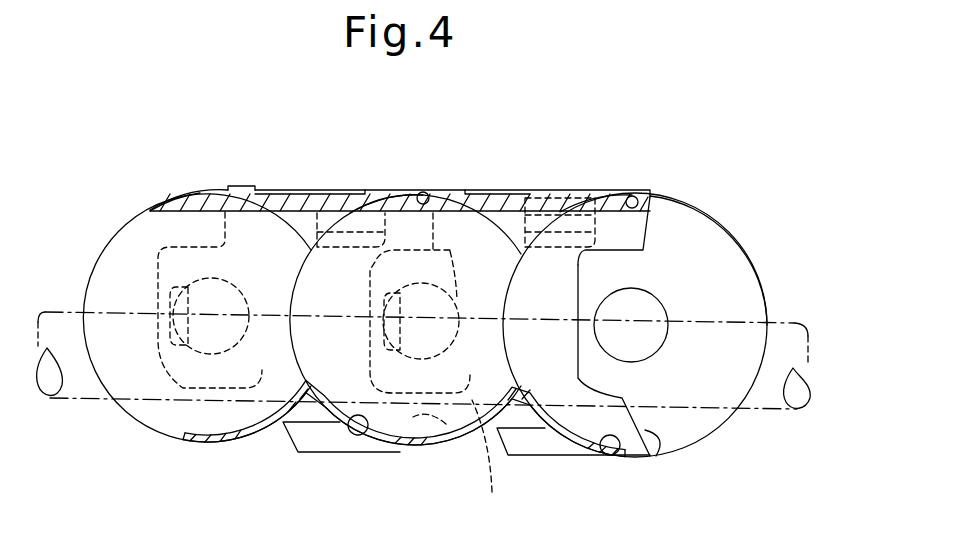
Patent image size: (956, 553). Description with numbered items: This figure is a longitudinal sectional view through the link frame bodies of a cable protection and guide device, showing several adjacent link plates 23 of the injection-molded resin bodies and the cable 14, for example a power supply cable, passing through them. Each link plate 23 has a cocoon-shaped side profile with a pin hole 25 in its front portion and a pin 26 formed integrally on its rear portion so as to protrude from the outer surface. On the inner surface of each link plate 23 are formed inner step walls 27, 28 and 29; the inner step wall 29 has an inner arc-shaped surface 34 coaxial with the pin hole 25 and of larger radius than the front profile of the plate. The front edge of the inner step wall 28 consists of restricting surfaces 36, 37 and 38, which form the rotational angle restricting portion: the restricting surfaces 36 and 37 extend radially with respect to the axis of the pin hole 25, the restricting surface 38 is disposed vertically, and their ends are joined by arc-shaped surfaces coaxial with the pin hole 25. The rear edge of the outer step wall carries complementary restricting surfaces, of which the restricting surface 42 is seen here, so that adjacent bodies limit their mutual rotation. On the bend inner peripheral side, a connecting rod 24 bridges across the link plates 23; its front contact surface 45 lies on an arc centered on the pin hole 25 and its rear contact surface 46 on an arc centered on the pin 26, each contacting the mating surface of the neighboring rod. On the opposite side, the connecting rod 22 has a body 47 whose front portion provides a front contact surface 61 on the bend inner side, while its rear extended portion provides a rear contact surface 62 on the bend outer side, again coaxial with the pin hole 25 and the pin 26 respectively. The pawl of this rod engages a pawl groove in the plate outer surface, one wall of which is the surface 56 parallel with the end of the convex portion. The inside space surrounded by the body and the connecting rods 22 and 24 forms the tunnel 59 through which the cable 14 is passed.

The cable 14 is at (78, 400).
The connecting rod 22 is at (347, 190).
The link plate 23 is at (112, 236).
The connecting rod 24 is at (207, 443).
The pin hole 25 is at (240, 292).
The pin 26 is at (270, 398).
The inner step wall 27 is at (742, 267).
The inner step wall 28 is at (137, 228).
The inner step wall 29 is at (512, 216).
The inner arc-shaped surface 34 is at (515, 285).
The restricting surface 36 is at (650, 227).
The restricting surface 37 is at (420, 425).
The restricting surface 38 is at (583, 282).
The restricting surface 42 is at (491, 461).
The front contact surface 45 is at (347, 452).
The rear contact surface 46 is at (247, 442).
The body 47 is at (280, 200).
The surface 56 is at (368, 215).
The tunnel 59 is at (357, 351).
The front contact surface 61 is at (427, 198).
The rear contact surface 62 is at (197, 190).